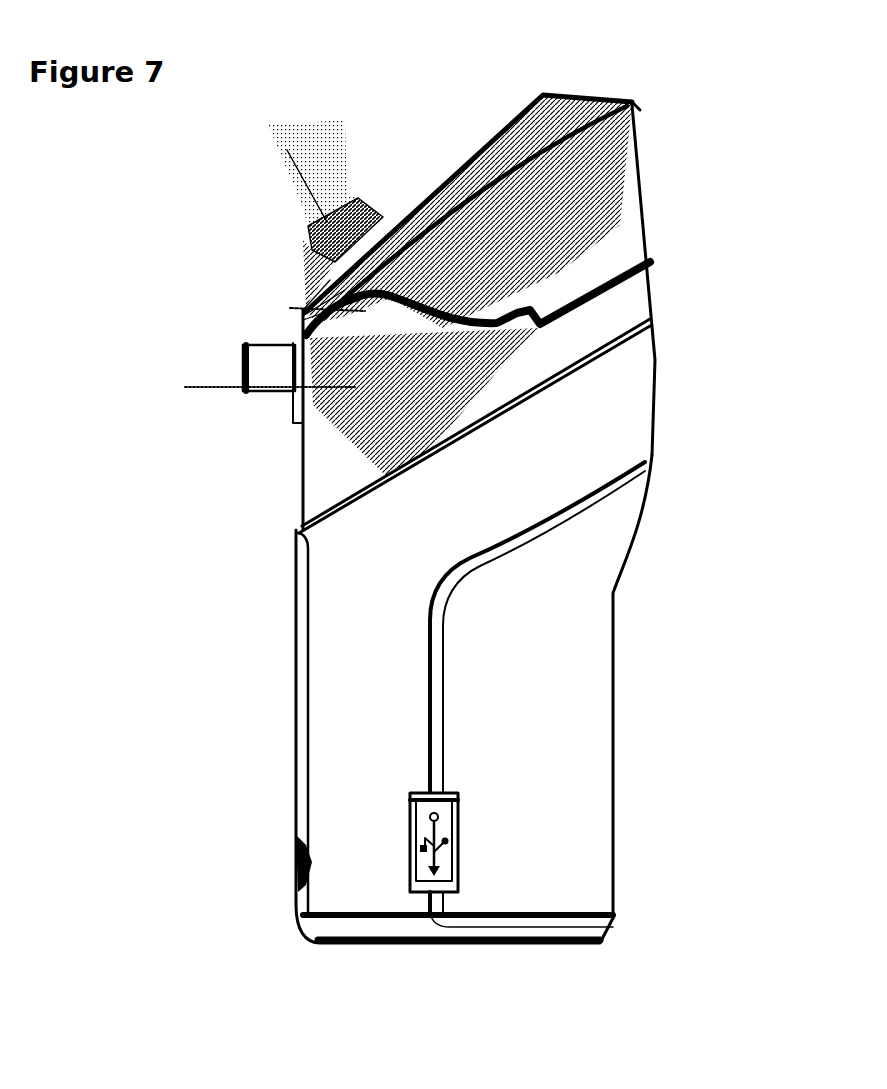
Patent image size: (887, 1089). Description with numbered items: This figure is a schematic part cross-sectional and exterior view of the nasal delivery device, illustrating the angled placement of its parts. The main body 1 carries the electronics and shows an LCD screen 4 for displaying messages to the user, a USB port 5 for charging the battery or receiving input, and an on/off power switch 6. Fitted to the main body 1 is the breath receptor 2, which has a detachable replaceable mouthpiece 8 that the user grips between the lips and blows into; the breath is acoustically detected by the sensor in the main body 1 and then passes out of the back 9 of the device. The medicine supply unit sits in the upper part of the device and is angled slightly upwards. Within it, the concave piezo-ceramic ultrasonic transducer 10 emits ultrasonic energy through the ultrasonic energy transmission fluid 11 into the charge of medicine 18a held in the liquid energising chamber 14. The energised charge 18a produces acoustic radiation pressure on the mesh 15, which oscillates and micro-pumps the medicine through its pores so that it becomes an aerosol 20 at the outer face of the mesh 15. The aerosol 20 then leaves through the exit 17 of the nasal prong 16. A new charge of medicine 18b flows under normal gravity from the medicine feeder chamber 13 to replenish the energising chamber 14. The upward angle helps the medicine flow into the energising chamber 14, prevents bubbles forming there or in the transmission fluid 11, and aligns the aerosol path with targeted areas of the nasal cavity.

The main body 1 is at (580, 730).
The breath receptor 2 is at (297, 505).
The LCD screen 4 is at (297, 700).
The USB port 5 is at (455, 824).
The on/off power switch 6 is at (295, 857).
The mouthpiece 8 is at (240, 368).
The back 9 is at (652, 290).
The concave piezo-ceramic ultrasonic transducer 10 is at (305, 469).
The ultrasonic energy transmission fluid 11 is at (443, 347).
The medicine feeder chamber 13 is at (530, 122).
The liquid energising chamber 14 is at (290, 308).
The charge of medicine 18a is at (331, 310).
The mesh 15 is at (363, 286).
The nasal prong 16 is at (307, 240).
The exit 17 is at (357, 198).
The new charge of medicine 18b is at (477, 195).
The aerosol 20 is at (307, 140).